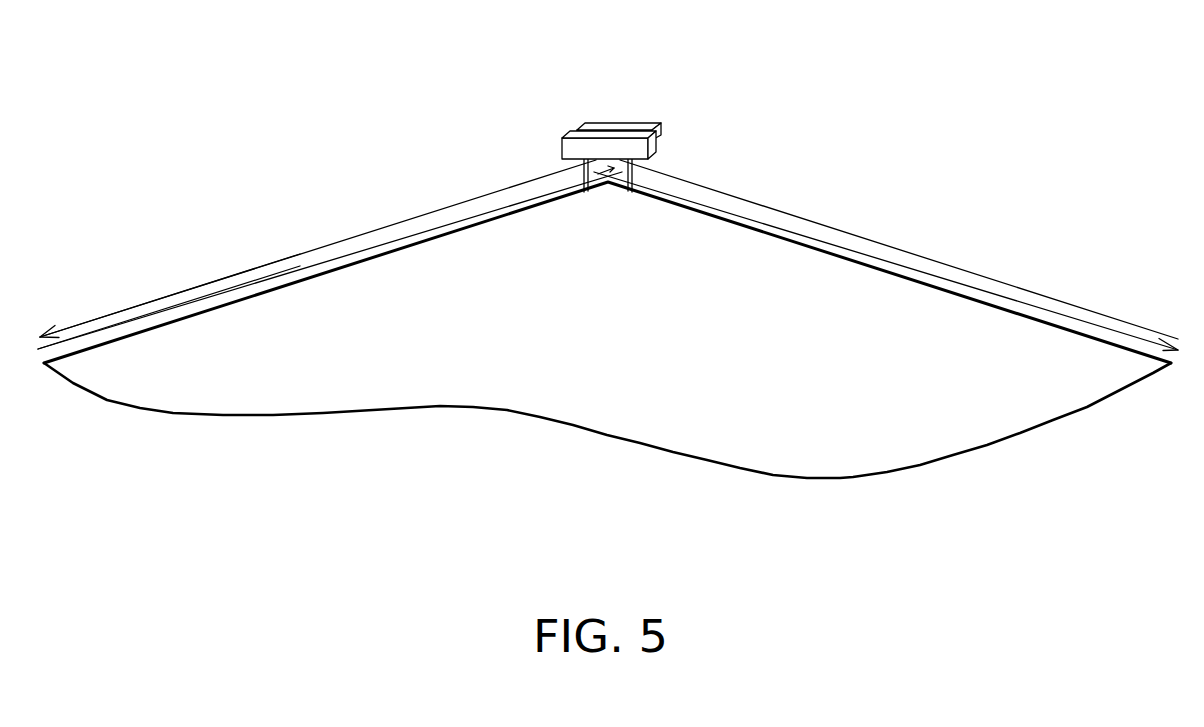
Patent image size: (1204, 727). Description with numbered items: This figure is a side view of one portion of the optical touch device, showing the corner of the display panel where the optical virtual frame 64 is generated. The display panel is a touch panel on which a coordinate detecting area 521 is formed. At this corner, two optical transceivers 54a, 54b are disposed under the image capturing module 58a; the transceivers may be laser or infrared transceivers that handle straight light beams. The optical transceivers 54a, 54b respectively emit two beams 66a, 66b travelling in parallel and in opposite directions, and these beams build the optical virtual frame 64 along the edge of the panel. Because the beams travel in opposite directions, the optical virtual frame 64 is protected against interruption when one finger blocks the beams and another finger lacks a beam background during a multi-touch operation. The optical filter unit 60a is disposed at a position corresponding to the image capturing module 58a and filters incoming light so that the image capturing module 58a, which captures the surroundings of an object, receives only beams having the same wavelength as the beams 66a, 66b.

The coordinate detecting area 521 is at (590, 412).
The optical virtual frame 64 is at (898, 251).
The beam 66a is at (335, 247).
The beam 66b is at (382, 243).
The optical transceiver 54a is at (637, 162).
The optical transceiver 54b is at (582, 187).
The image capturing module 58a is at (630, 125).
The optical filter unit 60a is at (592, 147).